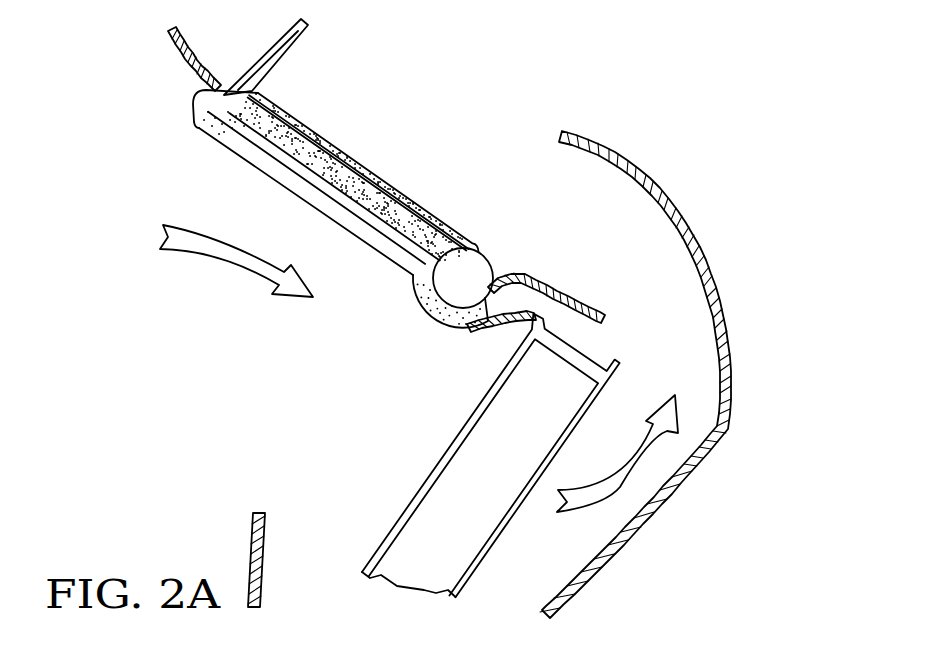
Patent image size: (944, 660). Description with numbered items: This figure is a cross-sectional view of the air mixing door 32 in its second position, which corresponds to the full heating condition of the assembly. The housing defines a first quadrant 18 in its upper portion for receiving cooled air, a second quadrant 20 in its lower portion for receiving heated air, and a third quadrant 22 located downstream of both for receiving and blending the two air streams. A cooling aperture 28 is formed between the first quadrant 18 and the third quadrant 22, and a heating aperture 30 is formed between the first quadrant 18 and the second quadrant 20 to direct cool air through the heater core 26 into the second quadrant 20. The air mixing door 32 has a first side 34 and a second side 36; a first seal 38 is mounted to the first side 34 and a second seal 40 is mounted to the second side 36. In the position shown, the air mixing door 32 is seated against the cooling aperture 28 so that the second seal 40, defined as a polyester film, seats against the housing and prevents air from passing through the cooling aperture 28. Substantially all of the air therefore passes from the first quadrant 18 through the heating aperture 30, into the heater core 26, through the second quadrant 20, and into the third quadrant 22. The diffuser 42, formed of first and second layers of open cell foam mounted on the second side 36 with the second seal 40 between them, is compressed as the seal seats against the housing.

The first quadrant 18 is at (276, 384).
The second quadrant 20 is at (559, 566).
The third quadrant 22 is at (446, 121).
The heater core 26 is at (467, 537).
The cooling aperture 28 is at (262, 86).
The heating aperture 30 is at (268, 520).
The air mixing door 32 is at (195, 146).
The first side 34 is at (393, 260).
The second side 36 is at (423, 211).
The first seal 38 is at (362, 228).
The second seal 40 is at (350, 167).
The diffuser 42 is at (287, 118).